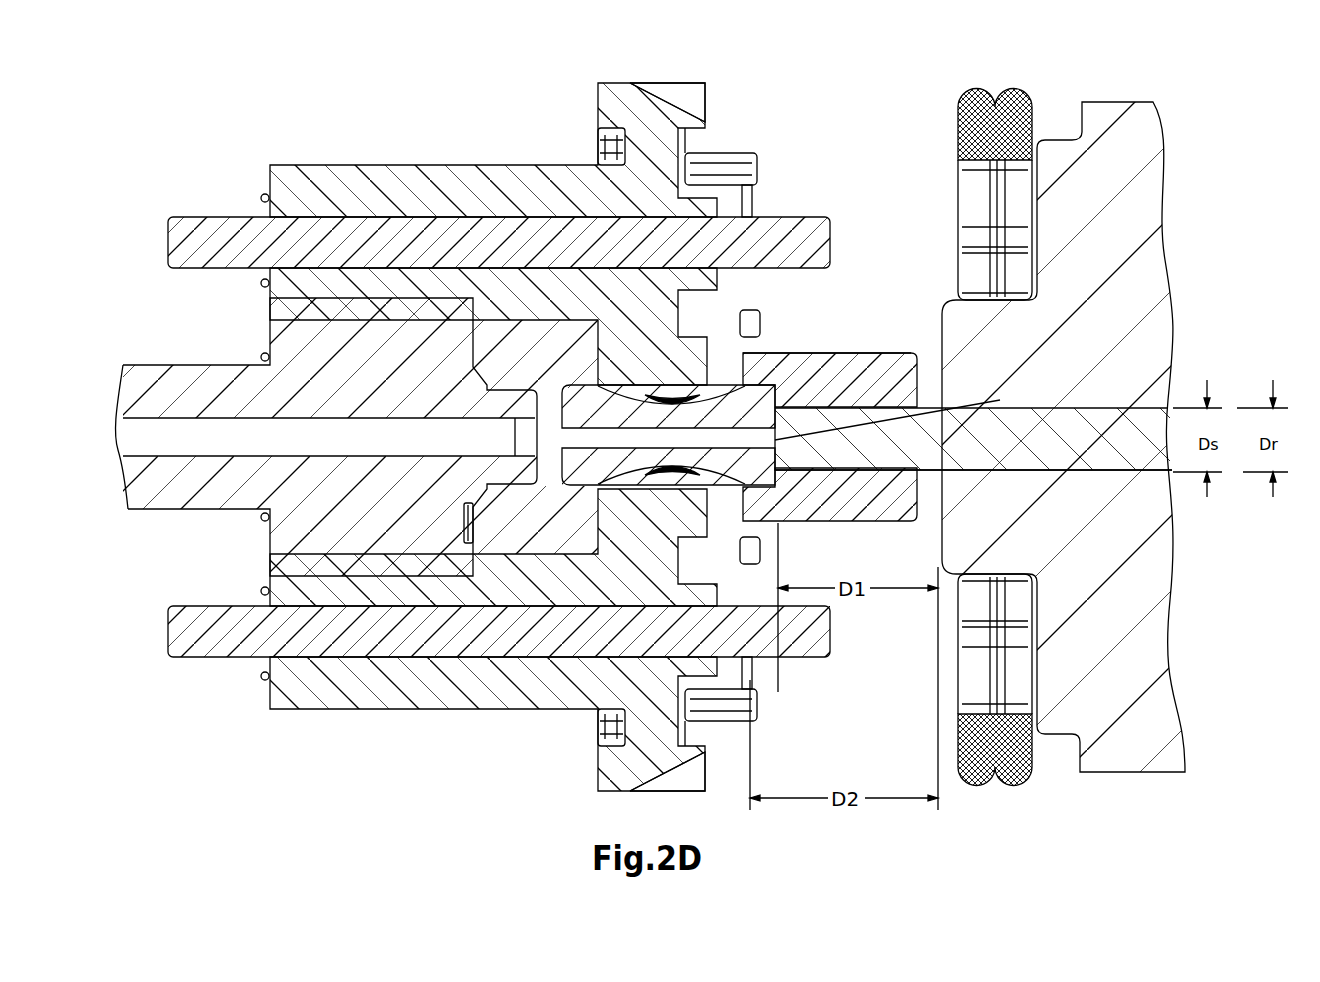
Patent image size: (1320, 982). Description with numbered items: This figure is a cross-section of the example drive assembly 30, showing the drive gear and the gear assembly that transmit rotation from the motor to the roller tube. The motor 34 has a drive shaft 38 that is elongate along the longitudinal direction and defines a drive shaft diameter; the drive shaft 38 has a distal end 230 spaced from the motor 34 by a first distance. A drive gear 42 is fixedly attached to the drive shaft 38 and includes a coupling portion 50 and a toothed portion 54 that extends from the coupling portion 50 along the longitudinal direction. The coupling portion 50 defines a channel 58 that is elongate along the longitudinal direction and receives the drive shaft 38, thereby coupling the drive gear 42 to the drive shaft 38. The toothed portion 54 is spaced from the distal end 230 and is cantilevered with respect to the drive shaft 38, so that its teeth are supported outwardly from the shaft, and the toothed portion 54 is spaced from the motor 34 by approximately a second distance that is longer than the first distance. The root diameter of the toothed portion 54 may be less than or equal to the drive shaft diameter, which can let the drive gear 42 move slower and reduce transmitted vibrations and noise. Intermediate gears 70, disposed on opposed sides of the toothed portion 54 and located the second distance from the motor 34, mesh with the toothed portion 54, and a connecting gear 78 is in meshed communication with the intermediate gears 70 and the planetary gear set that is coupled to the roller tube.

The drive assembly 30 is at (869, 130).
The motor 34 is at (1113, 308).
The drive shaft 38 is at (833, 503).
The drive gear 42 is at (870, 438).
The coupling portion 50 is at (822, 380).
The toothed portion 54 is at (585, 405).
The channel 58 is at (866, 392).
The intermediate gear 70 is at (727, 170).
The connecting gear 78 is at (400, 352).
The distal end 230 is at (1000, 400).